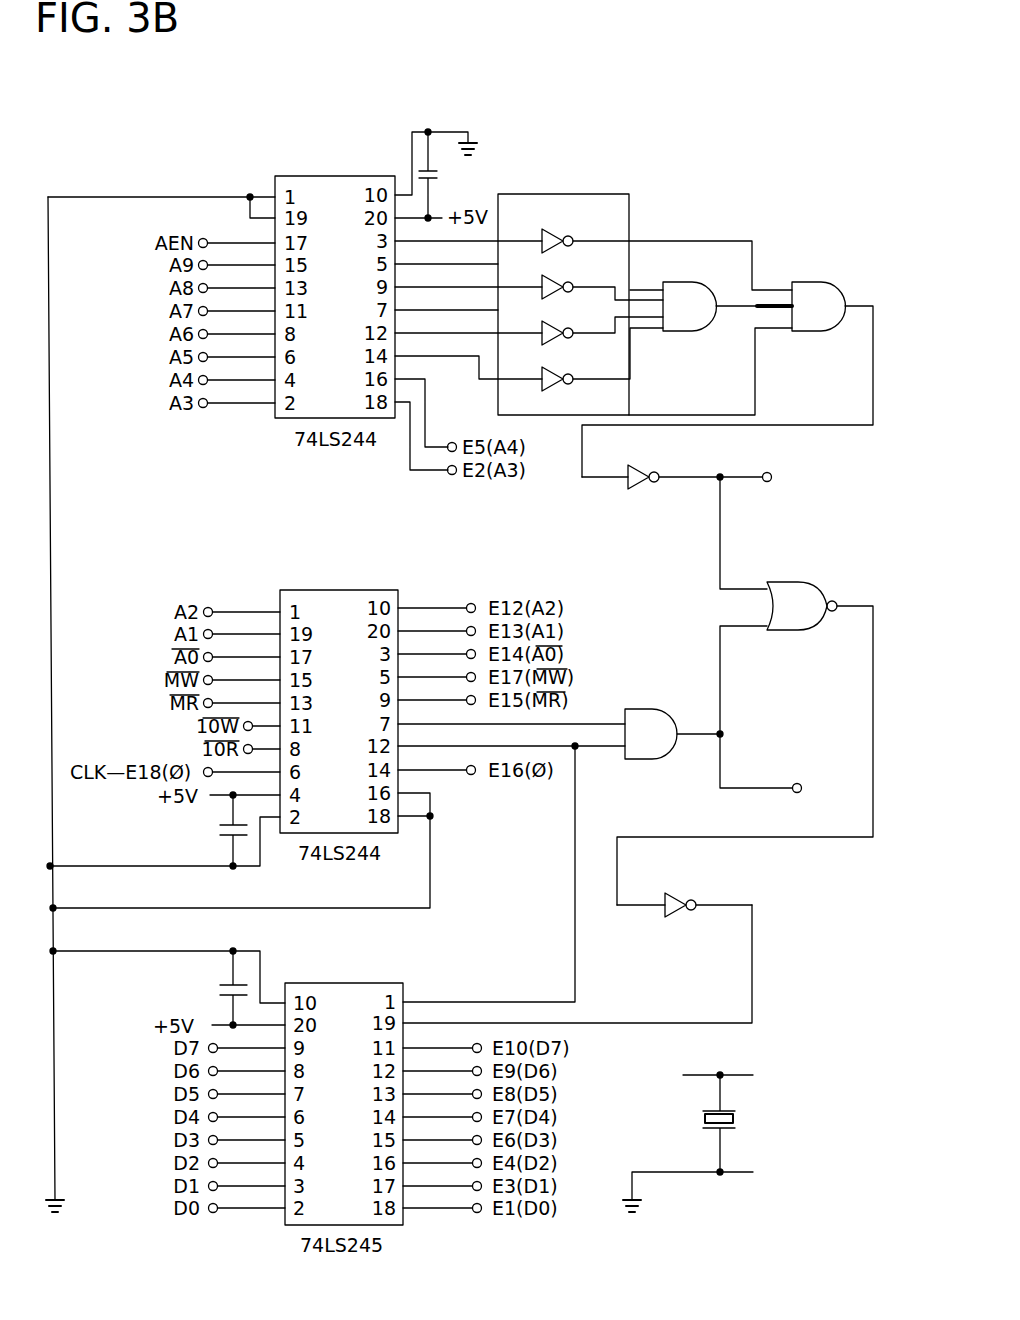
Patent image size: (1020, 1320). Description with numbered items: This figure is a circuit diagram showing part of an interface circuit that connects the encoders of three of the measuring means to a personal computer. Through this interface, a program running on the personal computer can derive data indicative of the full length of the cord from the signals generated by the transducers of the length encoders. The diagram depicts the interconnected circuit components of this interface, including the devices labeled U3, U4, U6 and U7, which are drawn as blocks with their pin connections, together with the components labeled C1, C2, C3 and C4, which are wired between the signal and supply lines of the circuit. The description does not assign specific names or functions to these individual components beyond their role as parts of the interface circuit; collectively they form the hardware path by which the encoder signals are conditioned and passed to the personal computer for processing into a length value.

The 74LS08 AND gate U3 is at (659, 736).
The 74LS04 hex inverter U4 is at (682, 567).
The 74LS02 NOR gate U6 is at (745, 691).
The 74LS21 AND gates U7 is at (727, 365).
The capacitor C1 is at (697, 1142).
The capacitor C2 is at (167, 988).
The capacitor C3 is at (163, 830).
The capacitor C4 is at (436, 173).